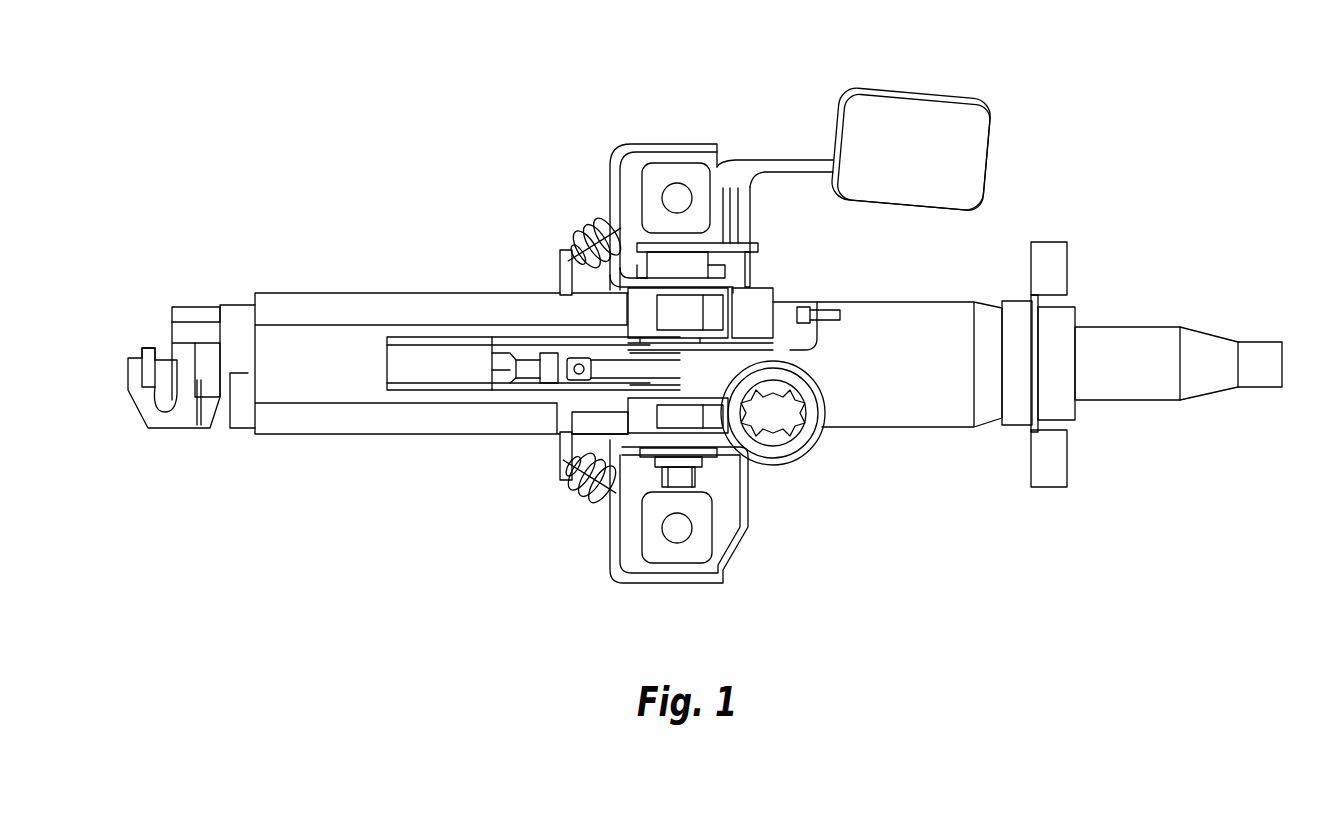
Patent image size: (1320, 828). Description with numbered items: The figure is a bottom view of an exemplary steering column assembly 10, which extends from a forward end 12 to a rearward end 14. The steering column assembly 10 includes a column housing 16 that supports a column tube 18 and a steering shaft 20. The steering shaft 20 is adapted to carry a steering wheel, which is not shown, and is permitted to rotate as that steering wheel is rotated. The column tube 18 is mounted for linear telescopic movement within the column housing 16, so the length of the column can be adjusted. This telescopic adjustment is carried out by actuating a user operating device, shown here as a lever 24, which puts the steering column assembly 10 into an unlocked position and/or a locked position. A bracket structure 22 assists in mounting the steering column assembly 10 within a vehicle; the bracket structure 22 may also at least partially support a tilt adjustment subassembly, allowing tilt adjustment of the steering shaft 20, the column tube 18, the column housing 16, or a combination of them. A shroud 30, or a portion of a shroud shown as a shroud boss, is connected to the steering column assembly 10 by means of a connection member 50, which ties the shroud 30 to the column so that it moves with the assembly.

The steering column assembly 10 is at (273, 212).
The forward end 12 is at (120, 434).
The rearward end 14 is at (1282, 298).
The column housing 16 is at (318, 418).
The column tube 18 is at (915, 425).
The steering shaft 20 is at (1157, 382).
The bracket structure 22 is at (613, 140).
The lever 24 is at (890, 107).
The shroud 30 is at (780, 455).
The connection member 50 is at (527, 372).